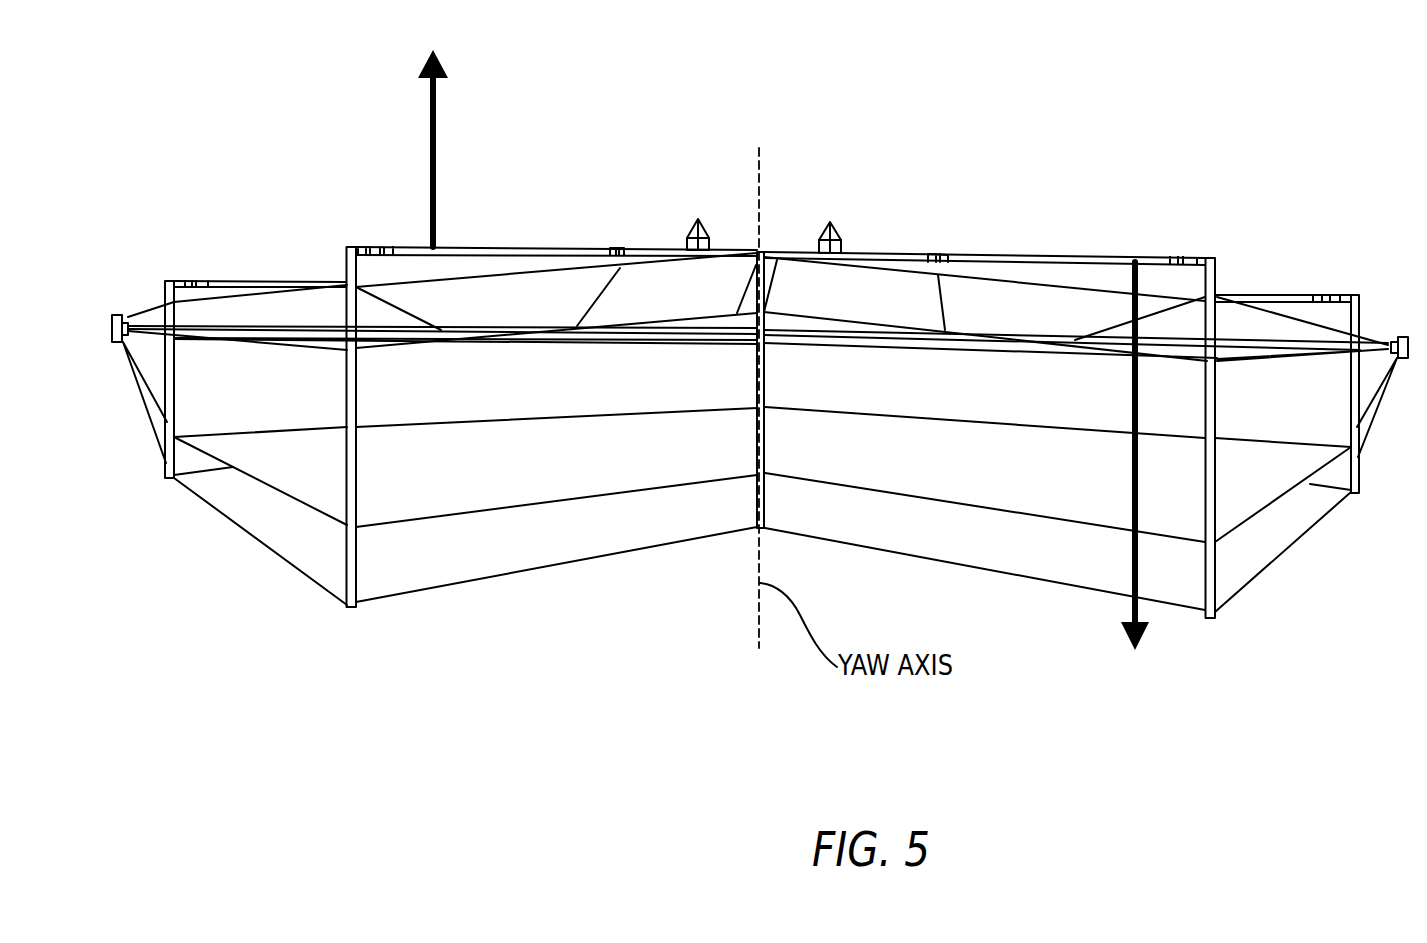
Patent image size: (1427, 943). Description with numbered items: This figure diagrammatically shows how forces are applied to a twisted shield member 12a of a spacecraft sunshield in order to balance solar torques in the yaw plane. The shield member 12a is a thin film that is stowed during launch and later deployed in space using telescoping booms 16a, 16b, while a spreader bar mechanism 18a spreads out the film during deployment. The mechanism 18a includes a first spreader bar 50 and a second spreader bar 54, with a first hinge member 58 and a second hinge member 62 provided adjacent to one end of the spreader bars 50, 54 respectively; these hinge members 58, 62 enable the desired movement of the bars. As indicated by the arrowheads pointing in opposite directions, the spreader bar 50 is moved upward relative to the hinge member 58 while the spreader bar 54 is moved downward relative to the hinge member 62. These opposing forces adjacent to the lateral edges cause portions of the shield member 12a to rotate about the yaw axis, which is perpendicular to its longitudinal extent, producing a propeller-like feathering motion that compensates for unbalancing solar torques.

The shield member 12a is at (245, 560).
The spreader bar mechanism 18a is at (1046, 250).
The first spreader bar 50 is at (475, 250).
The second spreader bar 54 is at (1003, 257).
The first hinge member 58 is at (623, 250).
The second hinge member 62 is at (943, 253).
The telescoping boom 16a is at (830, 222).
The telescoping boom 16b is at (698, 219).